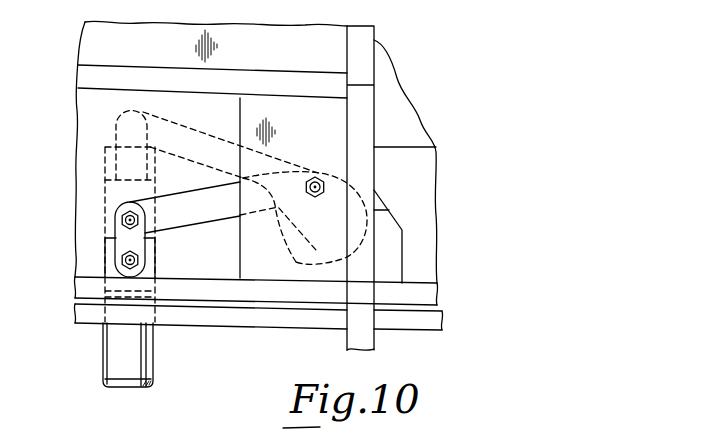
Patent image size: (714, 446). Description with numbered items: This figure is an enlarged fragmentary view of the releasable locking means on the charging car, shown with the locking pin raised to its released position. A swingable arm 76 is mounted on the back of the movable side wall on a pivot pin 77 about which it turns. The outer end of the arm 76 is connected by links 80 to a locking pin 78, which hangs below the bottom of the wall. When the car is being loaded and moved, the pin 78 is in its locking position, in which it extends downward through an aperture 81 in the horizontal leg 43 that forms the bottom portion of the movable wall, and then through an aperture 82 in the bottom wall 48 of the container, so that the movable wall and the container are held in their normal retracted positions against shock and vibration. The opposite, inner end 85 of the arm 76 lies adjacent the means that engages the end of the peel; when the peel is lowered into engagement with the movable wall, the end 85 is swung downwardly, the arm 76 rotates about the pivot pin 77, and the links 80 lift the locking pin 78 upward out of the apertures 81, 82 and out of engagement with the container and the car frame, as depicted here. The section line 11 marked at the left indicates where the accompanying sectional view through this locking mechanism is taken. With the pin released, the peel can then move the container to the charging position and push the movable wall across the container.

The section line 11- 11 is at (68, 198).
The horizontal leg 43 is at (352, 293).
The bottom wall 48 is at (306, 323).
The swingable arm 76 is at (202, 224).
The pivot pin 77 is at (317, 198).
The locking pin 78 is at (153, 373).
The links 80 is at (116, 231).
The aperture 81 is at (158, 293).
The aperture 82 is at (160, 316).
The inner end of arm 85 is at (387, 203).